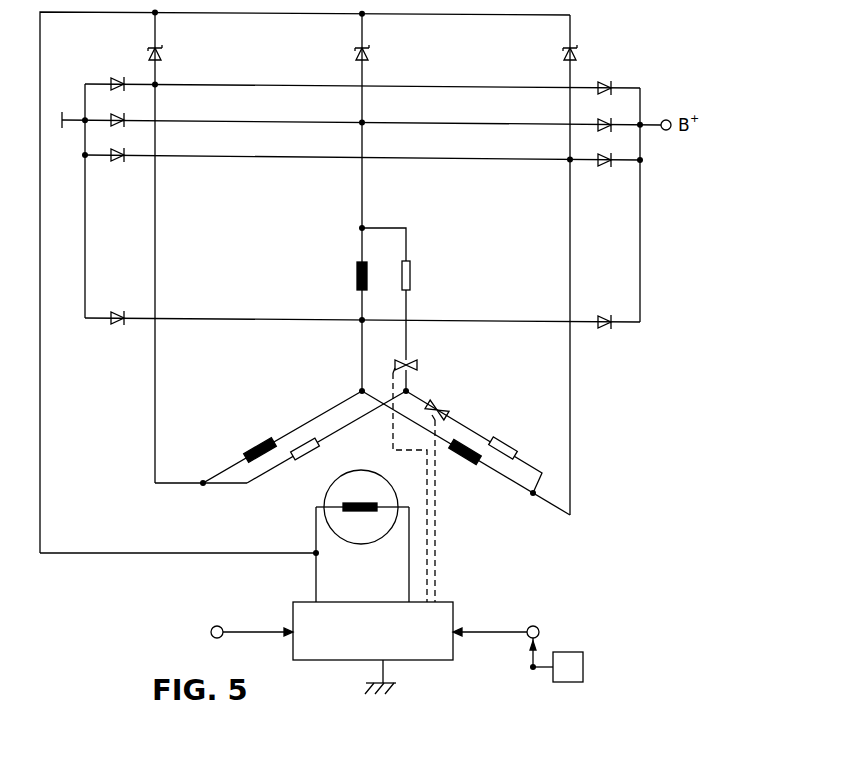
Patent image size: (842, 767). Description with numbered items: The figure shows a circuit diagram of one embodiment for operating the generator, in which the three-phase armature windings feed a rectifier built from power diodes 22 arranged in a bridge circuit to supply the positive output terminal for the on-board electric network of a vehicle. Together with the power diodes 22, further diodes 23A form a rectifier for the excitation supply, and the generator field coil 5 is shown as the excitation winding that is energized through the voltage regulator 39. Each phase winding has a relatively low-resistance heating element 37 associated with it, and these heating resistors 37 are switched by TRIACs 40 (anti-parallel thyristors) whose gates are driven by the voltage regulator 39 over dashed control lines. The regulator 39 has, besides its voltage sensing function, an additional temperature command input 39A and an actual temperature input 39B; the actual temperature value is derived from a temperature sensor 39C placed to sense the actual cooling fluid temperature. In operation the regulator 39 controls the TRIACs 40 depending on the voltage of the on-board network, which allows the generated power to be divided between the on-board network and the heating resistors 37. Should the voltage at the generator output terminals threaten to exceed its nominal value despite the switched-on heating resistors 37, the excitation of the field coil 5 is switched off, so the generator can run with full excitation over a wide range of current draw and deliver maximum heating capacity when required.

The power diodes 22 is at (113, 112).
The diodes 23A is at (159, 50).
The heating elements 37 is at (411, 272).
The TRIACs 40 is at (418, 365).
The field coil 5 is at (358, 513).
The voltage regulator 39 is at (445, 661).
The temperature command input 39A is at (210, 631).
The actual temperature input 39B is at (537, 628).
The temperature sensor 39C is at (565, 683).